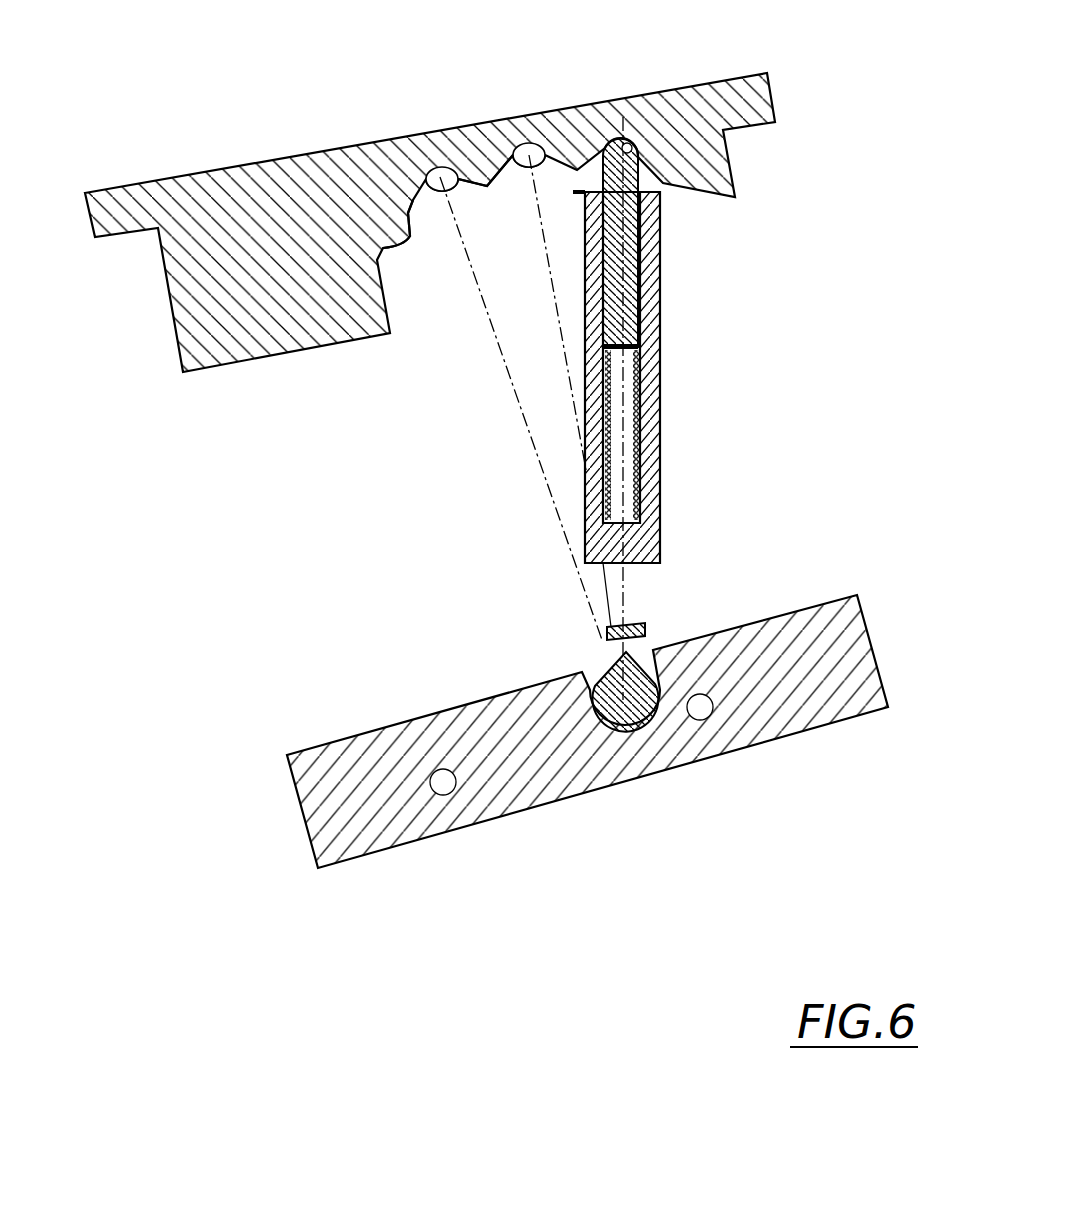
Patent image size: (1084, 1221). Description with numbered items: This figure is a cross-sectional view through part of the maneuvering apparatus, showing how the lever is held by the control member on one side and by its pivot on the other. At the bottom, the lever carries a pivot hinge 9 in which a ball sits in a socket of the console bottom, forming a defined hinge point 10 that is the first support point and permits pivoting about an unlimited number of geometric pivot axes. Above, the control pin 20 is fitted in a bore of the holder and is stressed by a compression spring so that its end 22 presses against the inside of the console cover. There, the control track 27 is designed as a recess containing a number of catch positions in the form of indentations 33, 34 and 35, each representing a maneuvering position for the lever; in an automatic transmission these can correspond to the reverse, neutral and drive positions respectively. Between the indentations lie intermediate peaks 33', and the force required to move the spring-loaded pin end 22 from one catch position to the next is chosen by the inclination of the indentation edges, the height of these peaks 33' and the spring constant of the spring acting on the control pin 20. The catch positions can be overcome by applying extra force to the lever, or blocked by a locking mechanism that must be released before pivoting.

The pivot hinge 9 is at (604, 735).
The hinge point 10 is at (655, 713).
The control pin 20 is at (662, 320).
The end of the locking pin 22 is at (660, 174).
The control track 27 is at (413, 204).
The catch position 33 is at (496, 320).
The intermediate peak 33' is at (390, 320).
The catch position 34 is at (522, 143).
The catch position 35 is at (643, 152).